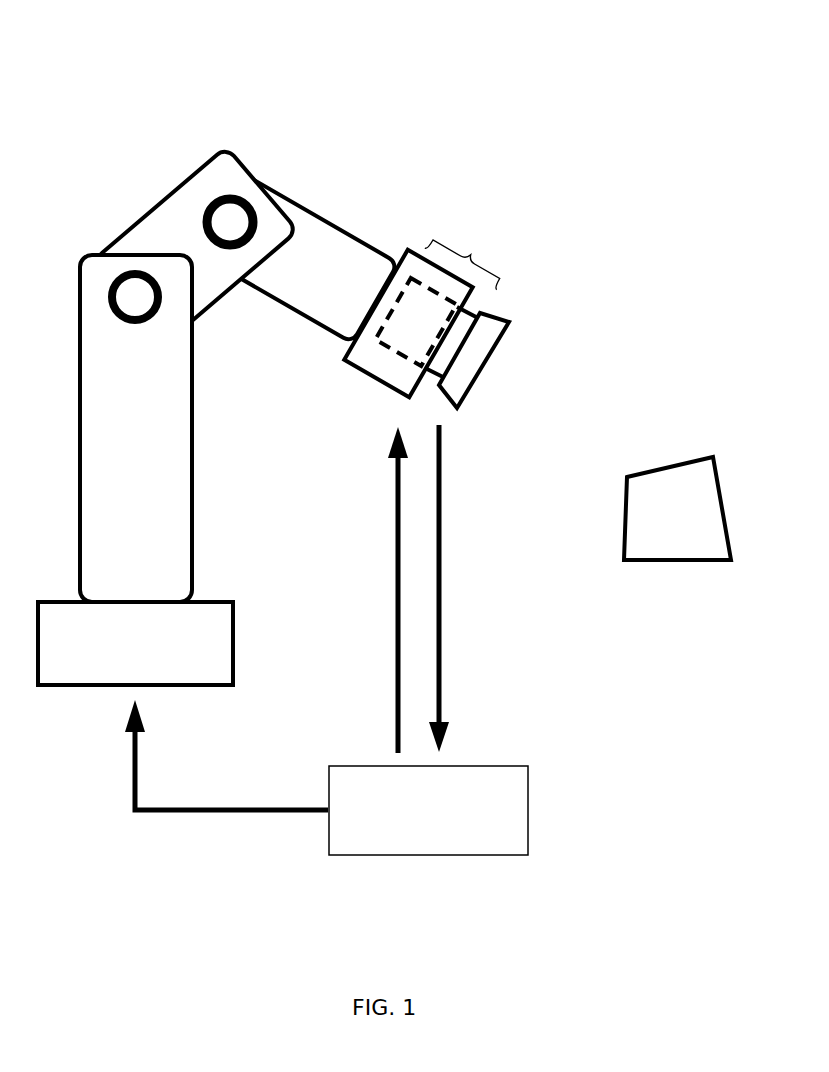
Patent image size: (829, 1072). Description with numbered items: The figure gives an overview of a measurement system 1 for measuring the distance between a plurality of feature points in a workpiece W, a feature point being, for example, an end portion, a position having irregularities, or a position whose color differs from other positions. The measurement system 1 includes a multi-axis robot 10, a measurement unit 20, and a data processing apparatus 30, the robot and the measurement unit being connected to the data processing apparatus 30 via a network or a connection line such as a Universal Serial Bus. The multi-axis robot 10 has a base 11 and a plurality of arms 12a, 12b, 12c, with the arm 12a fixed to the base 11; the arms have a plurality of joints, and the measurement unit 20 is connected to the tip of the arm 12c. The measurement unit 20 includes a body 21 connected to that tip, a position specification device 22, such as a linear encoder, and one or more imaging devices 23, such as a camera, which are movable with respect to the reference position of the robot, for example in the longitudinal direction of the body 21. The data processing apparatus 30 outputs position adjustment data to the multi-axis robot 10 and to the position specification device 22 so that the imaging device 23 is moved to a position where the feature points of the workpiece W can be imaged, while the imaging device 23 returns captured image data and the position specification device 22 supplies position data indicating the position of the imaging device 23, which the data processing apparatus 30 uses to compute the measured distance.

The measurement system 1 is at (60, 72).
The multi-axis robot 10 is at (150, 152).
The base 11 is at (233, 668).
The arm 12a is at (192, 437).
The arm 12b is at (238, 158).
The arm 12c is at (280, 192).
The measurement unit 20 is at (447, 209).
The body 21 is at (398, 393).
The position specification device 22 is at (465, 304).
The imaging device 23 is at (487, 360).
The data processing apparatus 30 is at (495, 766).
The workpiece W is at (626, 510).